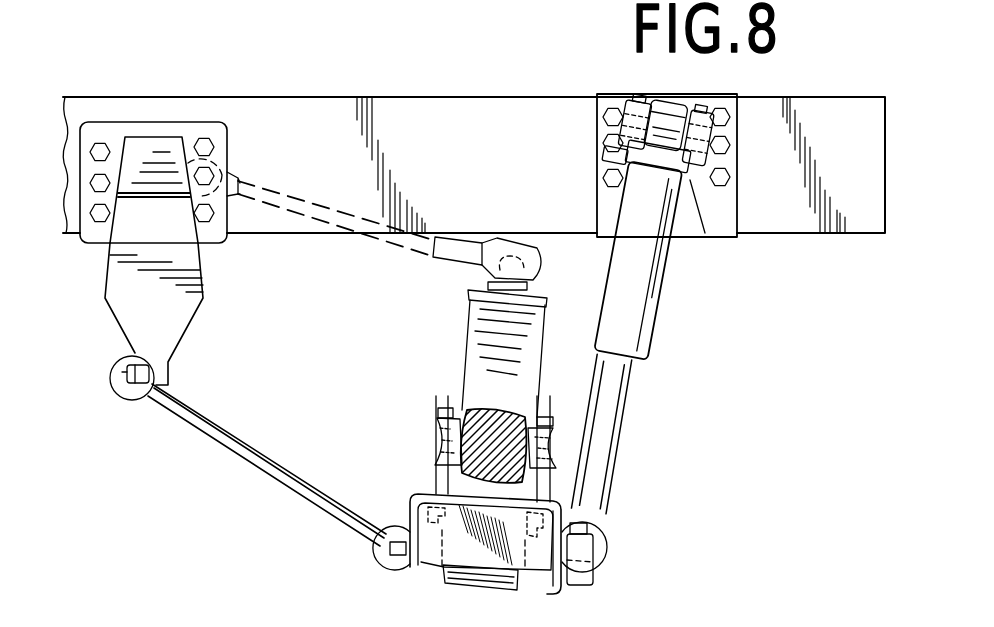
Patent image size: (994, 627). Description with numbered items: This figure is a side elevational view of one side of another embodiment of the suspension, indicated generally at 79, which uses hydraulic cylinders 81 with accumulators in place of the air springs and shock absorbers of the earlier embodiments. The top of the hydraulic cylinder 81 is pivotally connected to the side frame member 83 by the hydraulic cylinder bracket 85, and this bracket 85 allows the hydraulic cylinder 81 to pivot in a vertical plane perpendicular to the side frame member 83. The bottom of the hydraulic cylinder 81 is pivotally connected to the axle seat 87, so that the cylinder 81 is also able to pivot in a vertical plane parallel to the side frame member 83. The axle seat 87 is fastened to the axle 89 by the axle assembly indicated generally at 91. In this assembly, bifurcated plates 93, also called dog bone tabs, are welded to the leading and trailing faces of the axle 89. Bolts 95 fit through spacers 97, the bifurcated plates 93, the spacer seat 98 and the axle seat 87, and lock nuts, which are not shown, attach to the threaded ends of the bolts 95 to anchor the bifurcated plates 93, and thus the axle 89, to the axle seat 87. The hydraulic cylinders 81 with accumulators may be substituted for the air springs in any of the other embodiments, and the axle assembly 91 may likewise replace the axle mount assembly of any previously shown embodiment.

The suspension embodiment 79 is at (259, 503).
The hydraulic cylinder 81 is at (660, 313).
The side frame member 83 is at (212, 95).
The hydraulic cylinder bracket 85 is at (718, 132).
The axle seat 87 is at (600, 590).
The axle 89 is at (467, 410).
The axle assembly 91 is at (371, 429).
The bifurcated plates 93 is at (434, 452).
The bolts 95 is at (440, 410).
The spacers 97 is at (436, 424).
The spacer seat 98 is at (554, 481).